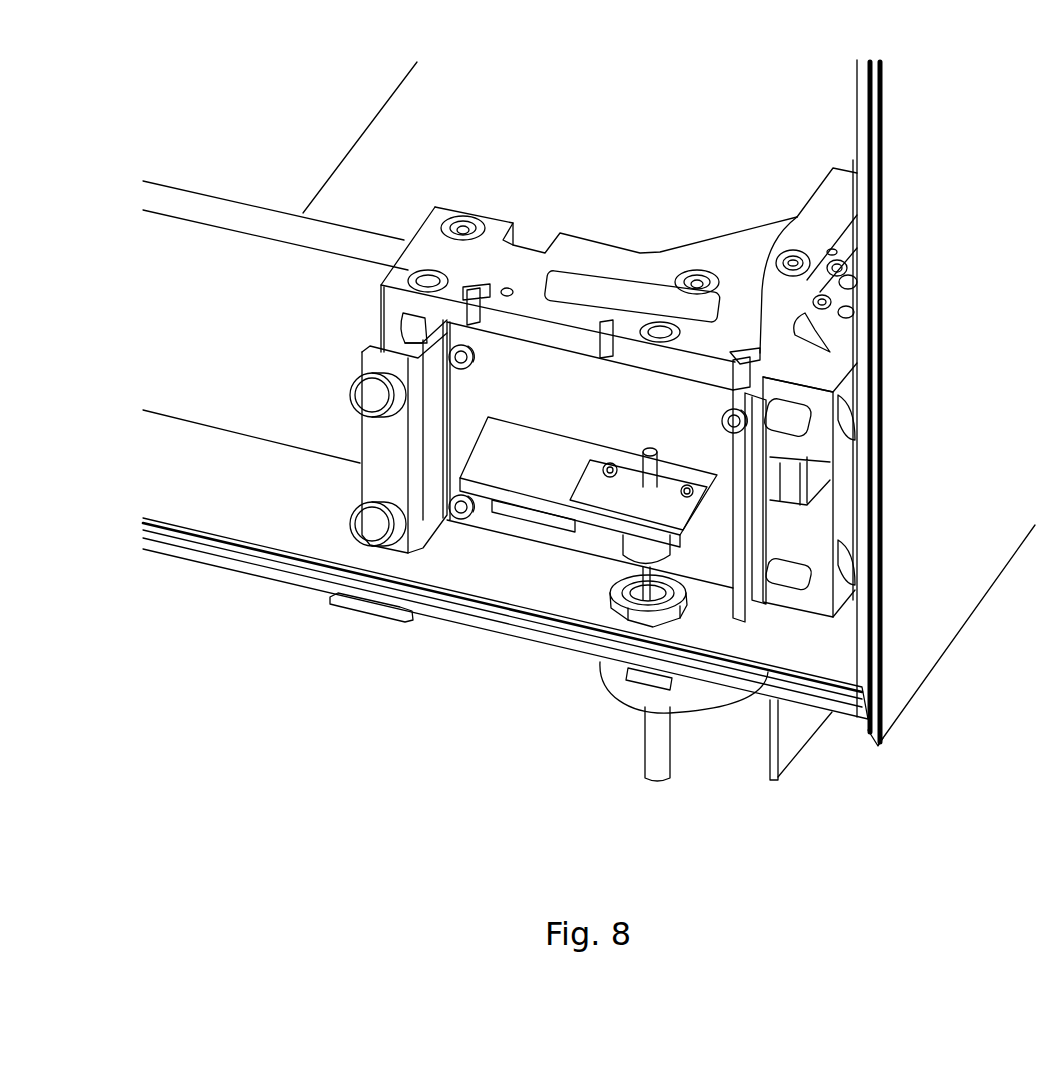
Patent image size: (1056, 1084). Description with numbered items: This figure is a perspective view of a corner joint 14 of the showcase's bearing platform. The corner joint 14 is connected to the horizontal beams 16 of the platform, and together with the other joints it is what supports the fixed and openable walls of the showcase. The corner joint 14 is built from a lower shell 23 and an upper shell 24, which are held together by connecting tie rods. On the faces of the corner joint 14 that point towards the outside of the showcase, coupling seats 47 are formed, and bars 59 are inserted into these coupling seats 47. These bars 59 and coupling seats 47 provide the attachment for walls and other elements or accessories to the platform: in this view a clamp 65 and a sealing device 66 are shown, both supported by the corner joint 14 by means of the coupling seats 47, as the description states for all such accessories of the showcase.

The corner joint 14 is at (560, 184).
The horizontal beam 16 is at (290, 233).
The bar 59 is at (747, 345).
The coupling seat 47 is at (759, 347).
The upper shell 24 is at (837, 435).
The lower shell 23 is at (820, 578).
The sealing device 66 is at (360, 415).
The clamp 65 is at (613, 603).